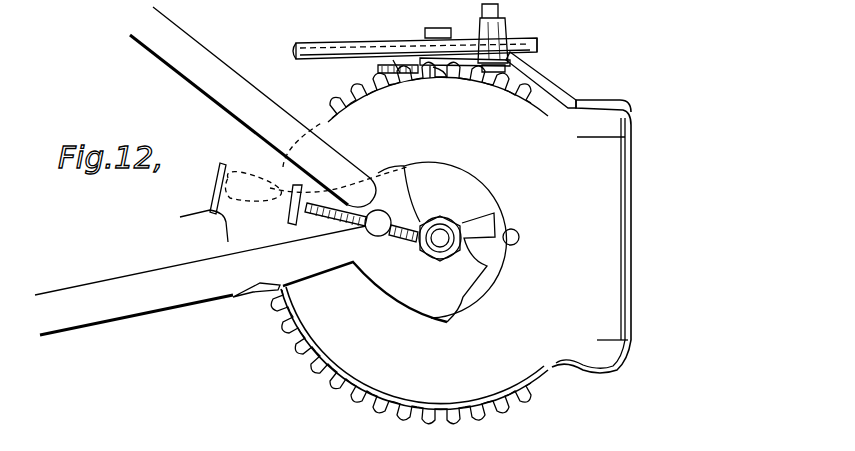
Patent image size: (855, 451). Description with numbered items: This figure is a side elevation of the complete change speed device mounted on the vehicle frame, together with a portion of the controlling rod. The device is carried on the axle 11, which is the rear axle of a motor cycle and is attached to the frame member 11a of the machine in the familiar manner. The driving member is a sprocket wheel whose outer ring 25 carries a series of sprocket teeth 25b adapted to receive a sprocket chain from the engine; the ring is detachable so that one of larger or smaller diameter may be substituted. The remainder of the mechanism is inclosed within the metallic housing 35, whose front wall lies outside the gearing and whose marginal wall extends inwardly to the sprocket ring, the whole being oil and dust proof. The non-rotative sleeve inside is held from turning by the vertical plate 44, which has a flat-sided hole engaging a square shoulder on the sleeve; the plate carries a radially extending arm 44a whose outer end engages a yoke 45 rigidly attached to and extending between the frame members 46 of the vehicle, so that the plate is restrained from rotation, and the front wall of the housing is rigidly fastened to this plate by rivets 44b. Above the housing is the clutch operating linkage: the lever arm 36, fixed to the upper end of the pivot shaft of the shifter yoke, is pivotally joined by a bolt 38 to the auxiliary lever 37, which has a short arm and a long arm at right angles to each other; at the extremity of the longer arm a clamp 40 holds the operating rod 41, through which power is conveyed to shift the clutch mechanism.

The axle 11 is at (440, 240).
The frame member 11a is at (350, 311).
The ring 25 is at (501, 408).
The sprocket teeth 25b is at (541, 394).
The housing 35 is at (600, 223).
The lever arm 36 is at (546, 90).
The auxiliary lever 37 is at (435, 66).
The bolt 38 is at (433, 38).
The clamp 40 is at (505, 18).
The operating rod 41 is at (535, 44).
The plate 44 is at (465, 181).
The radially extending arm 44a is at (268, 289).
The rivets 44b is at (532, 229).
The yoke 45 is at (213, 213).
The frame members 46 is at (215, 70).